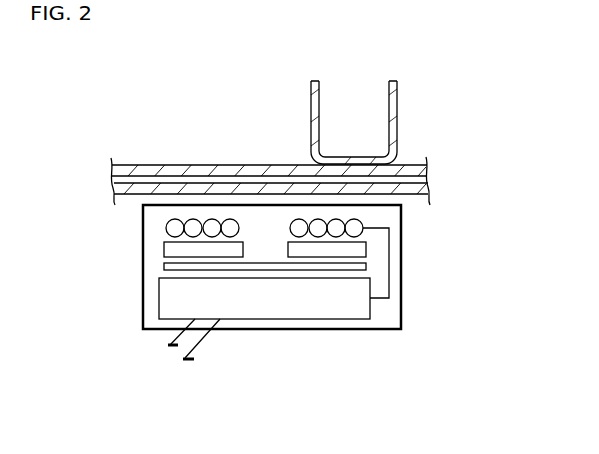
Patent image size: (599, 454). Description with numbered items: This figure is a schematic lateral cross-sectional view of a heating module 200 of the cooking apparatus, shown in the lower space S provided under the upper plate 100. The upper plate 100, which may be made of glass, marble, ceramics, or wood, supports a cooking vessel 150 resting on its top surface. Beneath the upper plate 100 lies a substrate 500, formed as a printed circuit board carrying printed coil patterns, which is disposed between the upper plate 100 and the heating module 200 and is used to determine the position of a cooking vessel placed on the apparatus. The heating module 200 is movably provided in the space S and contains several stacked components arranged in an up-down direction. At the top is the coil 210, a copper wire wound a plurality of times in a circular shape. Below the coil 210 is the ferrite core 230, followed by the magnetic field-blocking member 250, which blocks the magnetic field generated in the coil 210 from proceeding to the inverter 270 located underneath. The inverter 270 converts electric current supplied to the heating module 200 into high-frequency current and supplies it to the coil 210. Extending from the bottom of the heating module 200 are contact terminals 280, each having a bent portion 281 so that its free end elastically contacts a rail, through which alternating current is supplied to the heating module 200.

The upper plate 100 is at (285, 162).
The substrate 500 is at (197, 183).
The cooking vessel 150 is at (397, 113).
The lower space S is at (406, 201).
The heating module 200 is at (420, 268).
The coil 210 is at (166, 224).
The ferrite core 230 is at (164, 244).
The magnetic field-blocking member 250 is at (164, 266).
The inverter 270 is at (345, 319).
The contact terminal 280 is at (172, 348).
The bent portion 281 is at (180, 345).